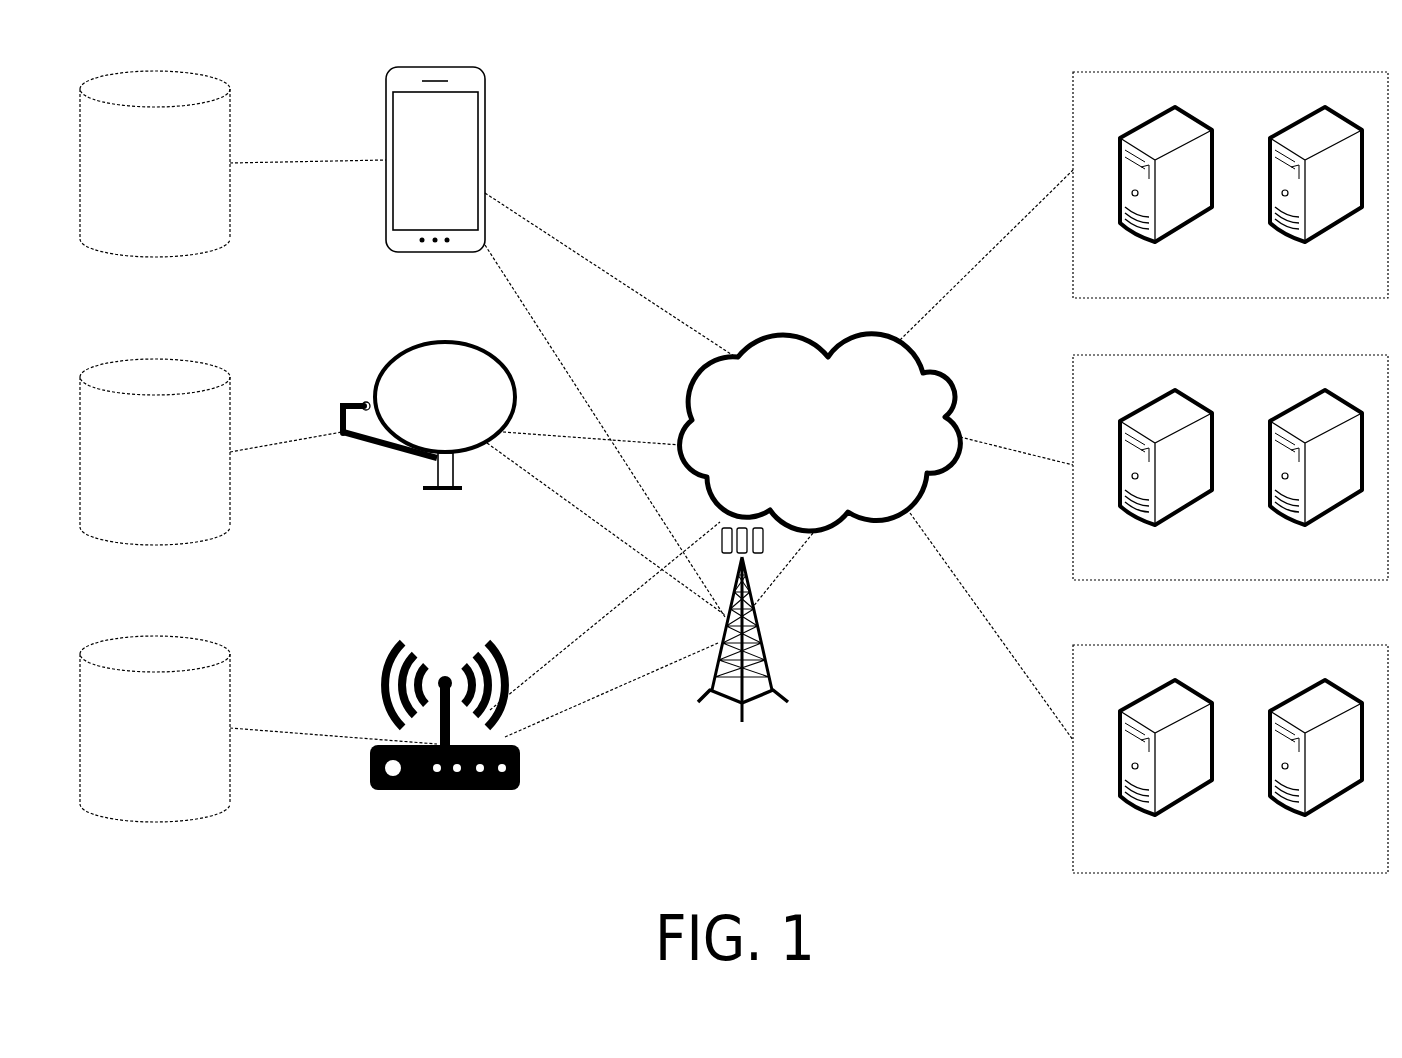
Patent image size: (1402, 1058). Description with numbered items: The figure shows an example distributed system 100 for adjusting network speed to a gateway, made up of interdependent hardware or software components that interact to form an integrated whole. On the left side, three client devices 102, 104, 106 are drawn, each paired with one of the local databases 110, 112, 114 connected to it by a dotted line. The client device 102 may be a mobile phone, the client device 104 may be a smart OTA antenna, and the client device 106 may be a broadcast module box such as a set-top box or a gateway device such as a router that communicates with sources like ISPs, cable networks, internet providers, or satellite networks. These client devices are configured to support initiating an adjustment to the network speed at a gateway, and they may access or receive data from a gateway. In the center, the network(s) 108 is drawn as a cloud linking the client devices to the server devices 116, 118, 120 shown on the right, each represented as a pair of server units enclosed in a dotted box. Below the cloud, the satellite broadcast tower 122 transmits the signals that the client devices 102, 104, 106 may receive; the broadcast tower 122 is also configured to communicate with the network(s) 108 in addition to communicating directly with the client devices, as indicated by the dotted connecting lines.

The system 100 is at (748, 141).
The client device 102 is at (417, 182).
The client device 104 is at (419, 552).
The client device 106 is at (431, 837).
The network(s) 108 is at (801, 476).
The local database 110 is at (137, 177).
The local database 112 is at (137, 464).
The local database 114 is at (137, 742).
The server device 116 is at (1215, 282).
The server device 118 is at (1215, 566).
The server device 120 is at (1215, 857).
The satellite broadcast tower 122 is at (724, 772).